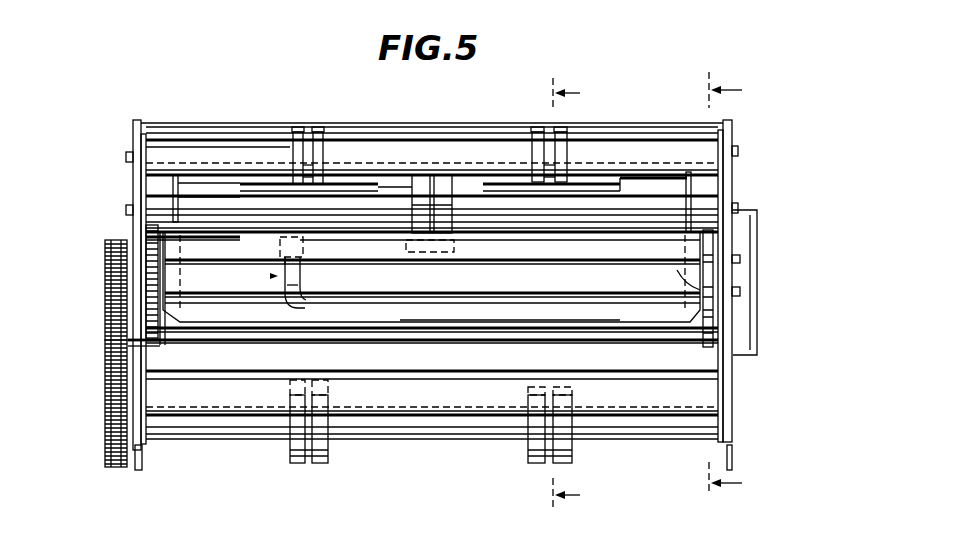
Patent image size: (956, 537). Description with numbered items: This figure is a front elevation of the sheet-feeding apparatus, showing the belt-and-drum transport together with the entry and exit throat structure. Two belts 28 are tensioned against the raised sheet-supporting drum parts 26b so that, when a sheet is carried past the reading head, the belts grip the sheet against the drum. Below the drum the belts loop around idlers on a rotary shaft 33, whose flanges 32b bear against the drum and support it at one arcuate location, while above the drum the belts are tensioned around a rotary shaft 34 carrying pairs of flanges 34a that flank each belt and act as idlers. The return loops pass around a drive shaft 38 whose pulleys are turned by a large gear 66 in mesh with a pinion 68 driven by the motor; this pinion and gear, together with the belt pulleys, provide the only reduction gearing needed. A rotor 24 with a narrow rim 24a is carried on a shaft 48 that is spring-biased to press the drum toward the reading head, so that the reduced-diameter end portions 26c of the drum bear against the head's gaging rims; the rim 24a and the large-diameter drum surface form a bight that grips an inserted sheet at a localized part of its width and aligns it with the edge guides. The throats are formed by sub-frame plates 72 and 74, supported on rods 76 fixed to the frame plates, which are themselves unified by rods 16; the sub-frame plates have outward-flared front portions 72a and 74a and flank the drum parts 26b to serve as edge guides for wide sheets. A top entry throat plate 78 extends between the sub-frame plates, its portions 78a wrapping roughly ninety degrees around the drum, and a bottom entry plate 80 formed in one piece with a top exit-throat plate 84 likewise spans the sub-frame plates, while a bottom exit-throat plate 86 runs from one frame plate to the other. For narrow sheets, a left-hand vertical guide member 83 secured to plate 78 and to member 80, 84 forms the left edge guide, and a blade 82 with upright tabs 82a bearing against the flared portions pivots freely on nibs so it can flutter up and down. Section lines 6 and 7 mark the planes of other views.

The rotary shaft 34 is at (652, 148).
The flanges 34a is at (603, 143).
The portions of entry-throat plate 78a is at (204, 172).
The drum parts 26b is at (352, 182).
The sub-frame plate 72 is at (172, 182).
The sub-frame plate 74 is at (692, 186).
The outward-flared front portion 72a is at (160, 238).
The belts 28 is at (306, 128).
The rotor 24 is at (450, 186).
The narrow rim 24a is at (430, 178).
The shaft 48 is at (518, 236).
The bottom entry plate 80 is at (246, 325).
The top exit-throat plate 84 is at (306, 344).
The bottom exit-throat plate 86 is at (236, 370).
The top entry throat plate 78 is at (216, 256).
The blade 82 is at (306, 306).
The upright tabs 82a is at (298, 292).
The left-hand vertical guide member 83 is at (272, 276).
The pinion 68 is at (118, 276).
The large gear 66 is at (112, 390).
The end portions of drum 26c is at (150, 312).
The drive shaft 38 is at (134, 343).
The outward-flared front portion 74a is at (706, 312).
The rods 76 is at (741, 291).
The rotary shaft 33 is at (244, 440).
The rods 16 is at (458, 404).
The flanges 32b is at (292, 465).
The section line 6 is at (574, 294).
The section line 7 is at (734, 284).